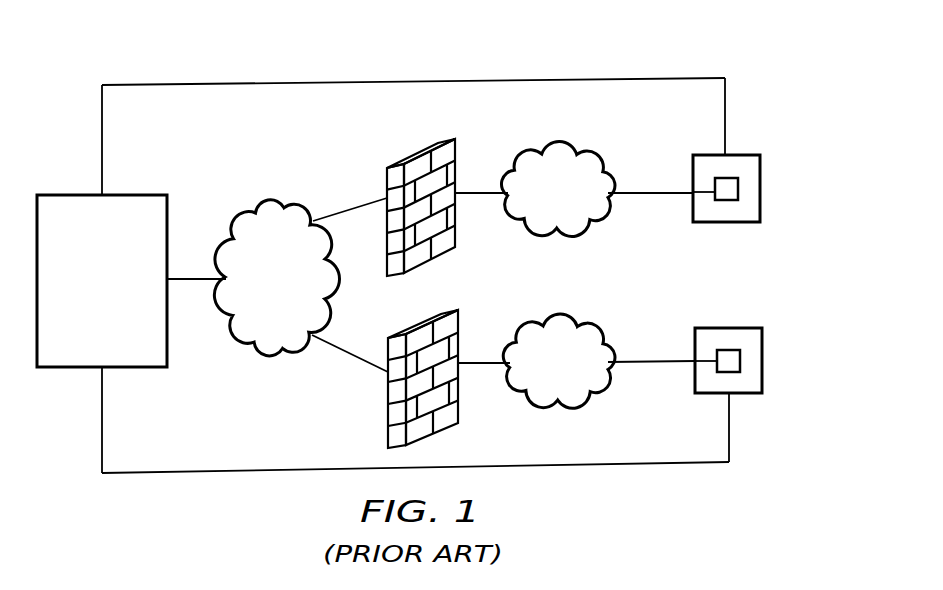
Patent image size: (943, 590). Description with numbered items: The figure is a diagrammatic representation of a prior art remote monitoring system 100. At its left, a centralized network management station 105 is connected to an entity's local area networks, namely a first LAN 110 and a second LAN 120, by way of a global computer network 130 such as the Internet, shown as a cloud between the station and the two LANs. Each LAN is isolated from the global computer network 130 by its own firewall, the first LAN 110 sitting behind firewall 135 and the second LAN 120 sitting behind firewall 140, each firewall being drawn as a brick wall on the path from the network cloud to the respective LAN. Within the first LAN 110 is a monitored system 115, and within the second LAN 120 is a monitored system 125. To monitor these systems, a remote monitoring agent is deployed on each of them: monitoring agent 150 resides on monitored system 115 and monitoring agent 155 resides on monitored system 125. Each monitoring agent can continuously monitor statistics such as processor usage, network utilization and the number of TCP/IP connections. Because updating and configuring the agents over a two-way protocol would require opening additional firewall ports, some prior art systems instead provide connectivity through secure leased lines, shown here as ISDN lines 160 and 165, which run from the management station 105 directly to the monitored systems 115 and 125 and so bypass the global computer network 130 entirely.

The remote monitoring system 100 is at (566, 58).
The centralized network management station 105 is at (124, 292).
The first LAN 110 is at (578, 204).
The monitored system 115 is at (765, 172).
The second LAN 120 is at (579, 377).
The monitored system 125 is at (766, 375).
The global computer network 130 is at (296, 291).
The firewall 135 is at (387, 177).
The firewall 140 is at (388, 395).
The monitoring agent 150 is at (735, 201).
The monitoring agent 155 is at (733, 349).
The ISDN line 160 is at (247, 83).
The ISDN line 165 is at (250, 470).